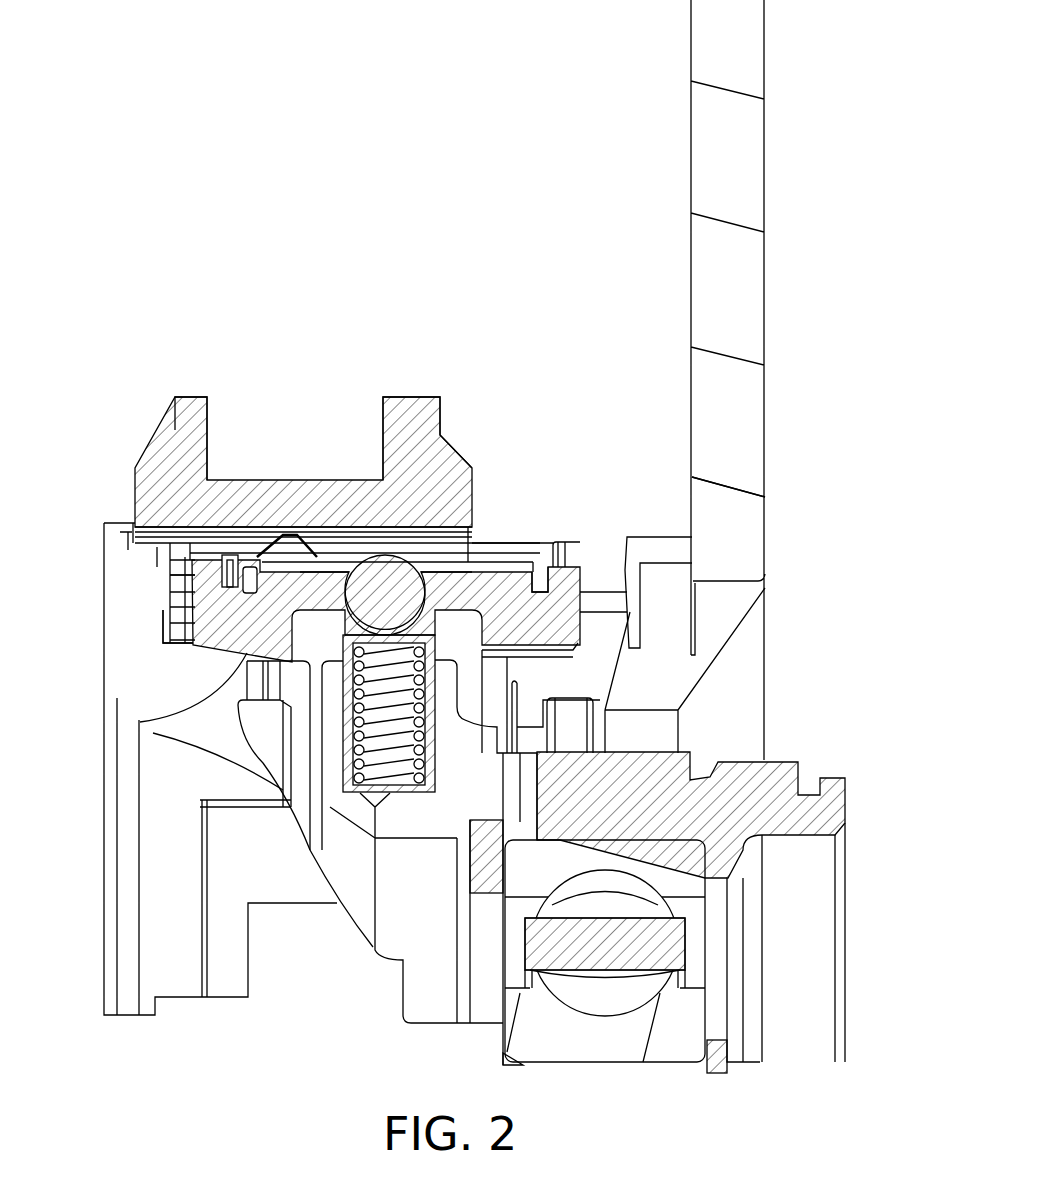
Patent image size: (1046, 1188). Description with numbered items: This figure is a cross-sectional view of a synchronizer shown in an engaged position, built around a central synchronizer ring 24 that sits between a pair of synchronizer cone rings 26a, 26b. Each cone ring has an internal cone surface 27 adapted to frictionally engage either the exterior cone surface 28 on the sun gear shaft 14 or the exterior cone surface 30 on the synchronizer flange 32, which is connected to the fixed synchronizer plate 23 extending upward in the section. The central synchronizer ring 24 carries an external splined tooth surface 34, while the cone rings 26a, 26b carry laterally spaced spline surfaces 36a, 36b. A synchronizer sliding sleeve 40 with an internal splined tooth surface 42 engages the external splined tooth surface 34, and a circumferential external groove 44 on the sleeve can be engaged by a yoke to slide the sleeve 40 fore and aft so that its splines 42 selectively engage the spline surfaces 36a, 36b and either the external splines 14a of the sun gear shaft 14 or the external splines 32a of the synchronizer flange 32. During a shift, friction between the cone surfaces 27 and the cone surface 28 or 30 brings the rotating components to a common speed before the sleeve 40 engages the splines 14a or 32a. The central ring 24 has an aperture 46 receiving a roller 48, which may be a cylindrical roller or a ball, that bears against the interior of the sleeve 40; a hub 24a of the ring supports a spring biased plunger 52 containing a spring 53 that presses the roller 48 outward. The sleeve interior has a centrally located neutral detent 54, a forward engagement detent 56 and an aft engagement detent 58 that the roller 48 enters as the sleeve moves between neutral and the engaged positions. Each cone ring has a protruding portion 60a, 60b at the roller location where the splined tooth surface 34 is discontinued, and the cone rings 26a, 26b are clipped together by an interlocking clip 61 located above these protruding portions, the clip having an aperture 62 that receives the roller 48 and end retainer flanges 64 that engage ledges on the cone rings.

The sun gear shaft 14 is at (207, 667).
The external splines 14a is at (121, 532).
The fixed synchronizer plate 23 is at (720, 377).
The central synchronizer ring 24 is at (522, 552).
The hub 24a is at (372, 947).
The synchronizer cone ring 26a is at (173, 565).
The synchronizer cone ring 26b is at (625, 592).
The internal cone surface 27 is at (147, 718).
The exterior cone surface 28 is at (173, 603).
The exterior cone surface 30 is at (540, 632).
The synchronizer flange 32 is at (665, 663).
The external splines 32a is at (672, 548).
The external splined tooth surface 34 is at (547, 562).
The spline surface 36a is at (133, 523).
The spline surface 36b is at (575, 555).
The synchronizer sliding sleeve 40 is at (245, 475).
The internal splined tooth surface 42 is at (352, 543).
The circumferential external groove 44 is at (207, 412).
The aperture 46 is at (345, 927).
The roller 48 is at (405, 592).
The spring biased plunger 52 is at (352, 758).
The spring 53 is at (343, 700).
The neutral detent 54 is at (258, 560).
The forward engagement detent 56 is at (228, 614).
The aft engagement detent 58 is at (420, 590).
The protruding portion 60a is at (318, 597).
The protruding portion 60b is at (510, 543).
The interlocking clip 61 is at (283, 567).
The aperture 62 is at (398, 560).
The end retainer flange 64 is at (173, 575).